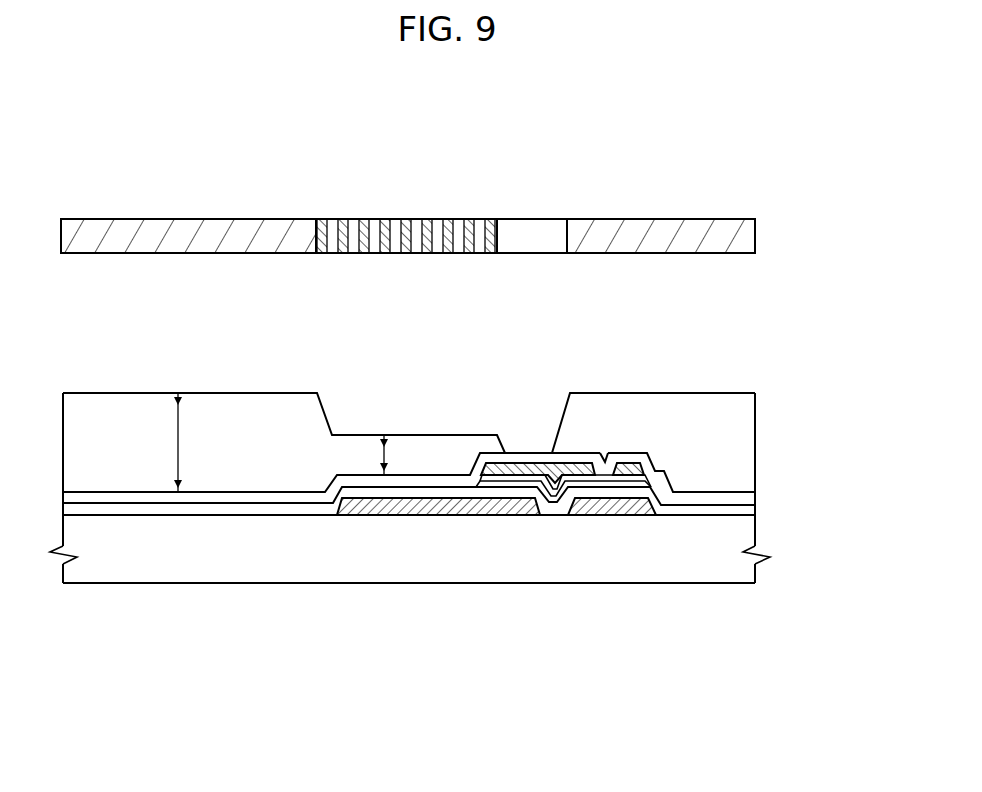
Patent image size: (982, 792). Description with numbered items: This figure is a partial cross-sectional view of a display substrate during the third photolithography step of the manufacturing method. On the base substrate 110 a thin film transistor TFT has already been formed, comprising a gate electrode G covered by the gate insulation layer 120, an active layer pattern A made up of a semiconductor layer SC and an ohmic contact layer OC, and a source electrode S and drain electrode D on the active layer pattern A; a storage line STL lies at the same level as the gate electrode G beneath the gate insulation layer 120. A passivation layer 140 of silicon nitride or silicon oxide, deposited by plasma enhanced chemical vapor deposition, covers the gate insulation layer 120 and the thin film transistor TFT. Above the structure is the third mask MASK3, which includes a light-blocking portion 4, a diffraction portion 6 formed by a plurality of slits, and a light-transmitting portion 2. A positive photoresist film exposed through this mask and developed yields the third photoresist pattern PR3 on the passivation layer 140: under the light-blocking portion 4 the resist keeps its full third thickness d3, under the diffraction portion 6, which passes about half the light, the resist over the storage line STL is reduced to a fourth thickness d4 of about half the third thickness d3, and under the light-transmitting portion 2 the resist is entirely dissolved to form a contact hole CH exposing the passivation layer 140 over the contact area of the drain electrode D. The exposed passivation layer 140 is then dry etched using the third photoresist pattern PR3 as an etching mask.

The third mask MASK3 is at (458, 213).
The light-blocking portion 4 is at (241, 227).
The diffraction portion 6 is at (497, 216).
The light-transmitting portion 2 is at (534, 227).
The third photoresist pattern PR3 is at (409, 405).
The third thickness d3 is at (193, 442).
The fourth thickness d4 is at (399, 455).
The contact hole CH is at (522, 458).
The passivation layer 140 is at (752, 497).
The gate insulation layer 120 is at (752, 513).
The base substrate 110 is at (752, 572).
The storage line STL is at (384, 508).
The drain electrode D is at (519, 465).
The semiconductor layer SC is at (577, 480).
The ohmic contact layer OC is at (593, 480).
The active layer pattern A is at (563, 578).
The source electrode S is at (623, 468).
The gate electrode G is at (643, 510).
The thin film transistor TFT is at (588, 548).